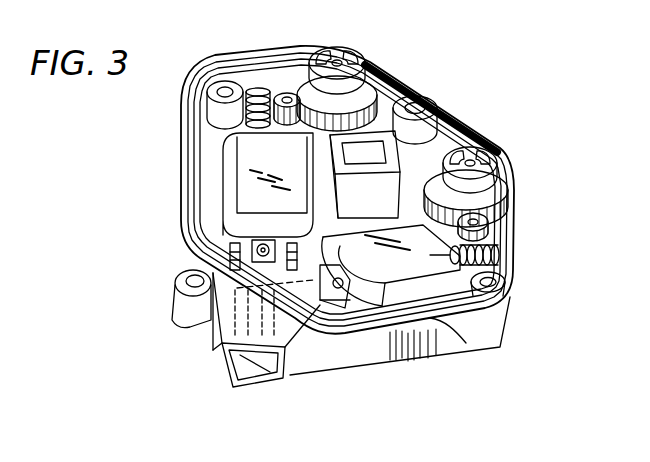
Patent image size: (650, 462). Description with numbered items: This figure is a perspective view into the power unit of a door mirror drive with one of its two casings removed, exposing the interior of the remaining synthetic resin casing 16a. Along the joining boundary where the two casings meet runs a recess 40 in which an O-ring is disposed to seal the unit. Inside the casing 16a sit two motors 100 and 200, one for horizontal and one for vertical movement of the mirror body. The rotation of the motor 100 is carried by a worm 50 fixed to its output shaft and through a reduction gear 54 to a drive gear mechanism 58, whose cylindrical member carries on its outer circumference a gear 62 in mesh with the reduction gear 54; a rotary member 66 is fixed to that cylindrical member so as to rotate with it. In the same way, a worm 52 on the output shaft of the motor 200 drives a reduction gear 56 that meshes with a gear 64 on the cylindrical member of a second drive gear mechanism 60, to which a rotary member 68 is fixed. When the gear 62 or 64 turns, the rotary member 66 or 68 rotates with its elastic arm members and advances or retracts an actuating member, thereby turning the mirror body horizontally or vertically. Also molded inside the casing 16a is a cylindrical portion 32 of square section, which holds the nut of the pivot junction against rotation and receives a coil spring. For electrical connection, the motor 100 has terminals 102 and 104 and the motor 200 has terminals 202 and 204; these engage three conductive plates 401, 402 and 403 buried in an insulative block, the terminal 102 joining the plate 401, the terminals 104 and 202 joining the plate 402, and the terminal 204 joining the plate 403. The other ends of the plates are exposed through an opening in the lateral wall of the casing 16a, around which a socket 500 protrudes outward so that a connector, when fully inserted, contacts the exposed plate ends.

The recess 40 is at (490, 143).
The worm 50 is at (258, 86).
The reduction gear 54 is at (284, 90).
The gear 62 is at (378, 57).
The rotary member 66 is at (336, 58).
The drive gear mechanism 58 is at (395, 78).
The cylindrical portion 32 is at (404, 150).
The gear 64 is at (456, 160).
The rotary member 68 is at (500, 160).
The drive gear mechanism 60 is at (492, 218).
The reduction gear 56 is at (500, 250).
The worm 52 is at (507, 272).
The motor 100 is at (222, 183).
The terminal 104 is at (250, 245).
The terminal 102 is at (232, 250).
The motor 200 is at (466, 343).
The terminal 202 is at (405, 335).
The terminal 204 is at (370, 348).
The casing 16a is at (320, 362).
The socket 500 is at (215, 351).
The conductive plate 401 is at (233, 333).
The conductive plate 402 is at (223, 367).
The conductive plate 403 is at (240, 388).